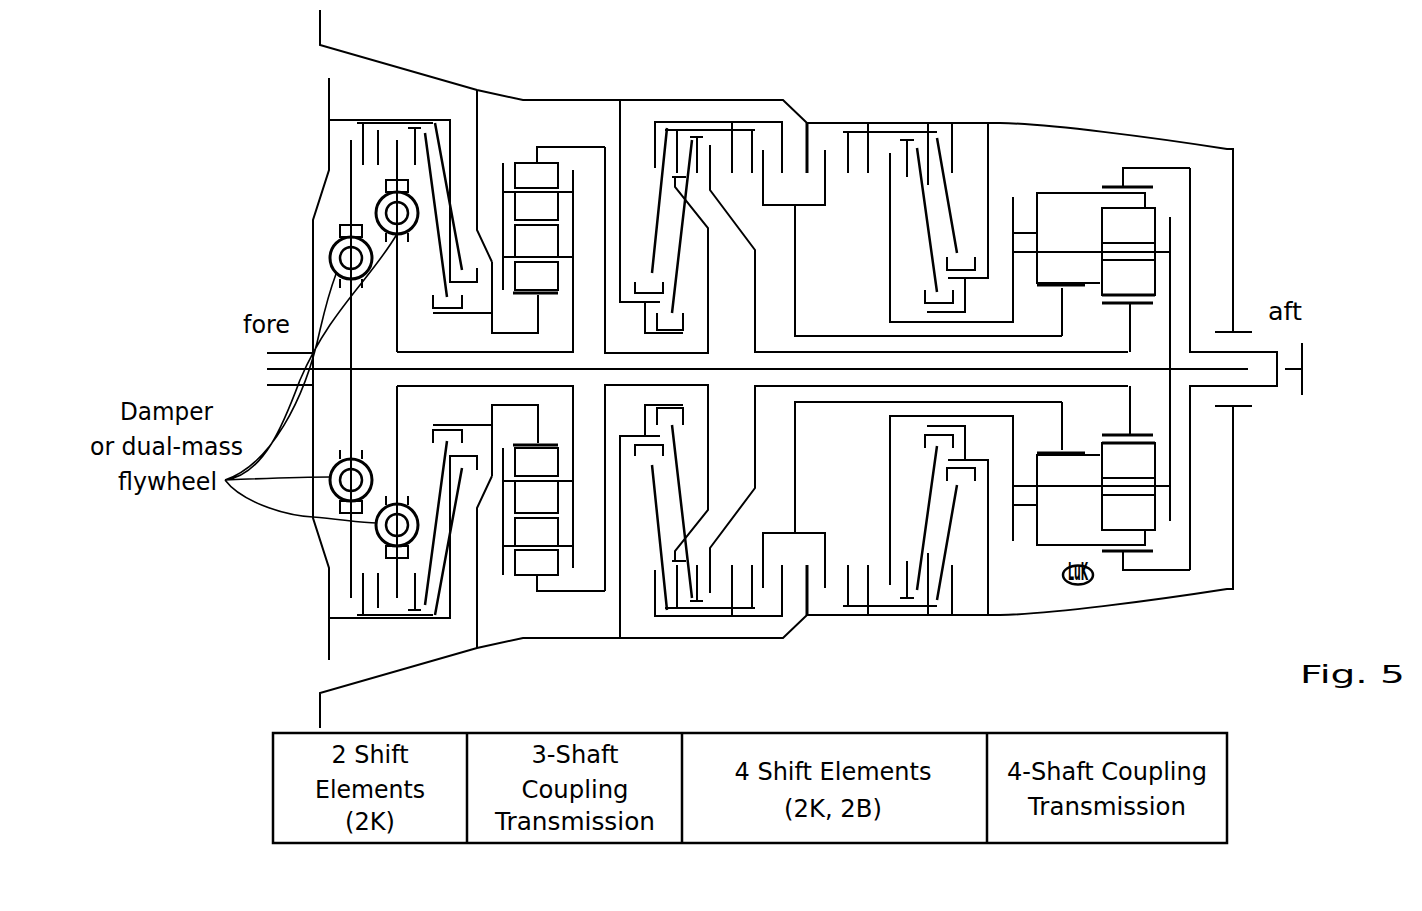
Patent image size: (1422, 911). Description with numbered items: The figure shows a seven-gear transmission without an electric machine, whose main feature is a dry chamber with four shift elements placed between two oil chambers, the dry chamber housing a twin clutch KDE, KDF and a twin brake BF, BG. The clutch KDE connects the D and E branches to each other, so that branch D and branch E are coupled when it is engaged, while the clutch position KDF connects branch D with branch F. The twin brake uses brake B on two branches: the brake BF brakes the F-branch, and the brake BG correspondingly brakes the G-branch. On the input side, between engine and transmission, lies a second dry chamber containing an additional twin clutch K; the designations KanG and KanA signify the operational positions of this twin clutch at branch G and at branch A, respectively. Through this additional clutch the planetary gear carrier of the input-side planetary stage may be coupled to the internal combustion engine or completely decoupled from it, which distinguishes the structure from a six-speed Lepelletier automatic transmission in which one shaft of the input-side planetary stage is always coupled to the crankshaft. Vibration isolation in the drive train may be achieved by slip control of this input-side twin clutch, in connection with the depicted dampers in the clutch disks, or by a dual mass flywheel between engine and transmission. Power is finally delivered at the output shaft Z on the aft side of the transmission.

The twin clutch operational position at branch A KanA is at (786, 369).
The twin clutch operational position at branch G KanG is at (353, 359).
The clutch KDE is at (693, 314).
The clutch KDF is at (886, 323).
The brake BF is at (869, 312).
The brake BG is at (951, 334).
The branch A is at (485, 369).
The brake B is at (525, 369).
The branch D is at (554, 354).
The branch E is at (1146, 369).
The branch F is at (1061, 369).
The branch G is at (1090, 355).
The output shaft Z is at (1223, 369).